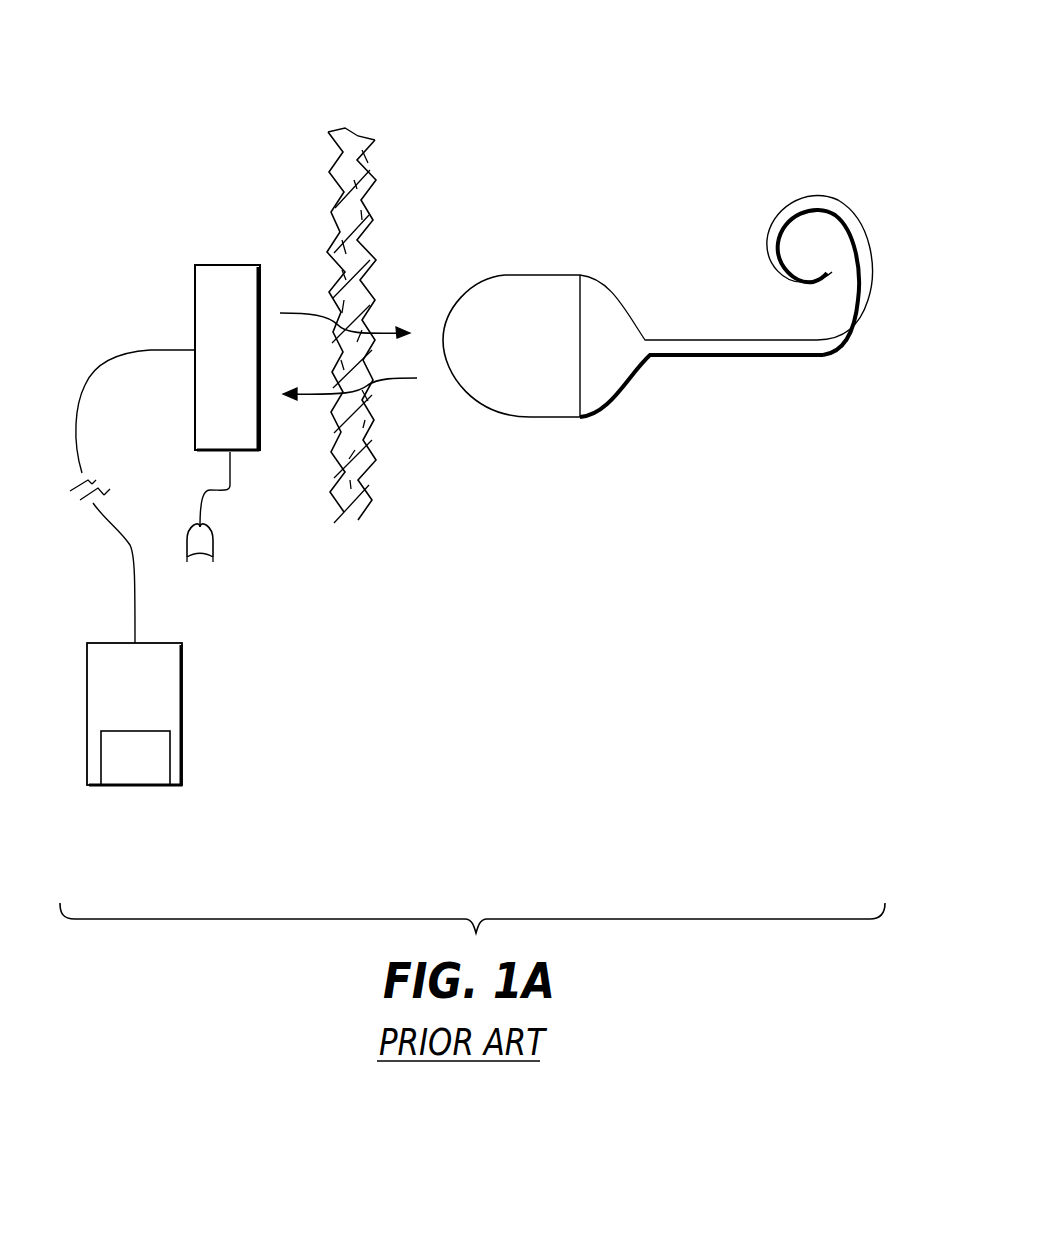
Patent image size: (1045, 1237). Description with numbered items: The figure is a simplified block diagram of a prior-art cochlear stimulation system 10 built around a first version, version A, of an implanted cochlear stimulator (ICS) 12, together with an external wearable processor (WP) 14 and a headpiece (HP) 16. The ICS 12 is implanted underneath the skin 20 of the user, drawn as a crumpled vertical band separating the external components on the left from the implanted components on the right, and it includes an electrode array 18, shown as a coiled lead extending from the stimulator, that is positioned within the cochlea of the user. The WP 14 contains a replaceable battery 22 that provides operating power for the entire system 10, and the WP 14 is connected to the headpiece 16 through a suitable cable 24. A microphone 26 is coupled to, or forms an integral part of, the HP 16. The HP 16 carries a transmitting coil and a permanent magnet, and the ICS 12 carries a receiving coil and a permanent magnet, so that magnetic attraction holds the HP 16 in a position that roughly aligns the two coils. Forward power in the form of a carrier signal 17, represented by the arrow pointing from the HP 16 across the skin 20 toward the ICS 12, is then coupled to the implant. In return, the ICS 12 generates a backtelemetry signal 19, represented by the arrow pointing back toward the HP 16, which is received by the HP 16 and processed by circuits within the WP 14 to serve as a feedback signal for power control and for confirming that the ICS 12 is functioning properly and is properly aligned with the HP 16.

The cochlear stimulation system 10 is at (588, 133).
The implanted cochlear stimulator (ICS) 12 is at (545, 275).
The wearable processor (WP) 14 is at (182, 675).
The headpiece (HP) 16 is at (233, 265).
The carrier signal 17 is at (312, 315).
The electrode array 18 is at (811, 198).
The backtelemetry signal 19 is at (410, 379).
The skin 20 is at (327, 160).
The replaceable battery 22 is at (138, 773).
The cable 24 is at (125, 362).
The microphone 26 is at (215, 545).